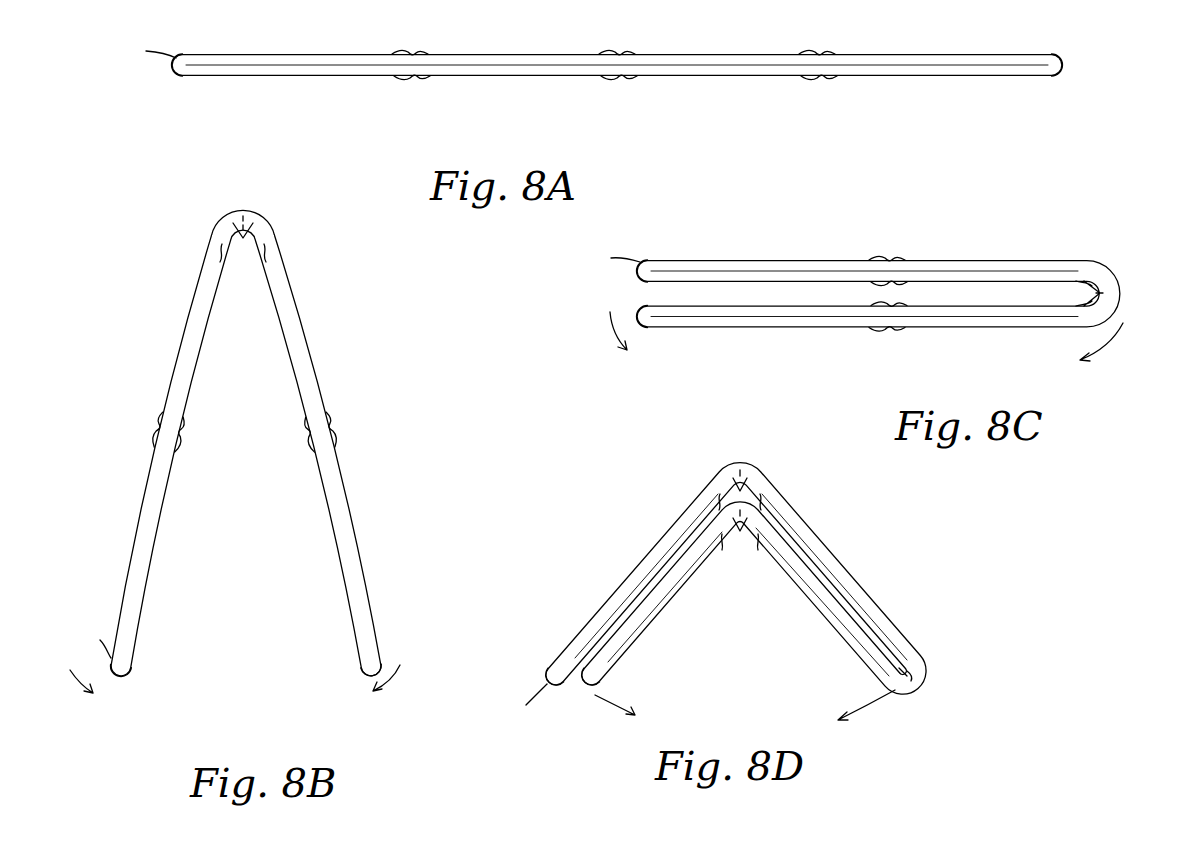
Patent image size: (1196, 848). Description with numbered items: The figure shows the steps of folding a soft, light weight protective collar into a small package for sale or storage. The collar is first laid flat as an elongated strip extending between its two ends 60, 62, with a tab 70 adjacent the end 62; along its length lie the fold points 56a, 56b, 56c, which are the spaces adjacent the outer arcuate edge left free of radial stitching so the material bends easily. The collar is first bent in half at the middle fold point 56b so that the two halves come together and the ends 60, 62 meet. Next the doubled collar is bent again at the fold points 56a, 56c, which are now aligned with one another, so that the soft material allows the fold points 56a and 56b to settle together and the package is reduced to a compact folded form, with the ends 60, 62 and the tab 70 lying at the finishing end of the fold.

In FIG. 8A, the fold point 56a is at (411, 79).
In FIG. 8B, the fold point 56a is at (157, 426).
In FIG. 8C, the fold point 56a is at (889, 262).
In FIG. 8D, the fold point 56a is at (756, 460).
In FIG. 8A, the fold point 56b is at (617, 78).
In FIG. 8B, the fold point 56b is at (247, 208).
In FIG. 8C, the fold point 56b is at (1118, 286).
In FIG. 8D, the fold point 56b is at (925, 683).
In FIG. 8A, the fold point 56c is at (816, 78).
In FIG. 8B, the fold point 56c is at (333, 426).
In FIG. 8C, the fold point 56c is at (891, 330).
In FIG. 8D, the fold point 56c is at (741, 532).
In FIG. 8A, the end 60 is at (1064, 60).
In FIG. 8B, the end 60 is at (361, 682).
In FIG. 8C, the end 60 is at (642, 328).
In FIG. 8D, the end 60 is at (588, 688).
In FIG. 8A, the end 62 is at (172, 72).
In FIG. 8B, the end 62 is at (107, 660).
In FIG. 8C, the end 62 is at (640, 280).
In FIG. 8D, the end 62 is at (550, 690).
In FIG. 8A, the tab 70 is at (180, 56).
In FIG. 8B, the tab 70 is at (95, 639).
In FIG. 8C, the tab 70 is at (660, 261).
In FIG. 8D, the tab 70 is at (538, 672).